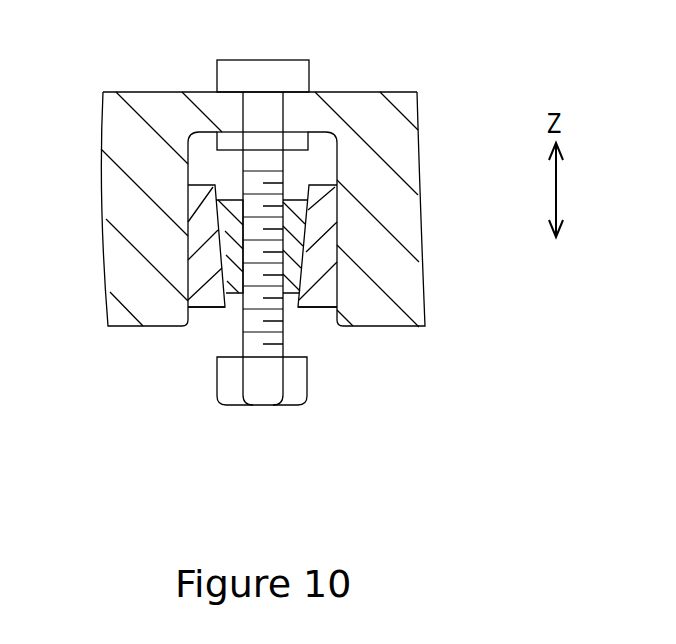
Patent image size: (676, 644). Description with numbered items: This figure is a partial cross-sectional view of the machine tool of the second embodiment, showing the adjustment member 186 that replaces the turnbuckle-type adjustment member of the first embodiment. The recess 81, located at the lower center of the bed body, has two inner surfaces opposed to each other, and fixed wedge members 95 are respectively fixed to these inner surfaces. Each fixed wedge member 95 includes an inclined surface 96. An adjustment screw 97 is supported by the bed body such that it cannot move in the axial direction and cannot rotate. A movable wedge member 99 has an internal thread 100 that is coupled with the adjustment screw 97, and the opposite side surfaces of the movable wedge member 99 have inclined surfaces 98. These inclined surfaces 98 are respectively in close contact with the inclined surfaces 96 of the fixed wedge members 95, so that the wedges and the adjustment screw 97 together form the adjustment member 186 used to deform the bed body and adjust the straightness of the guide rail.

The recess 81 is at (191, 314).
The fixed wedge member 95 is at (201, 307).
The inclined surface 96 is at (232, 249).
The adjustment screw 97 is at (248, 405).
The inclined surface 98 is at (215, 200).
The movable wedge member 99 is at (230, 197).
The internal thread 100 is at (273, 296).
The adjustment member 186 is at (328, 403).